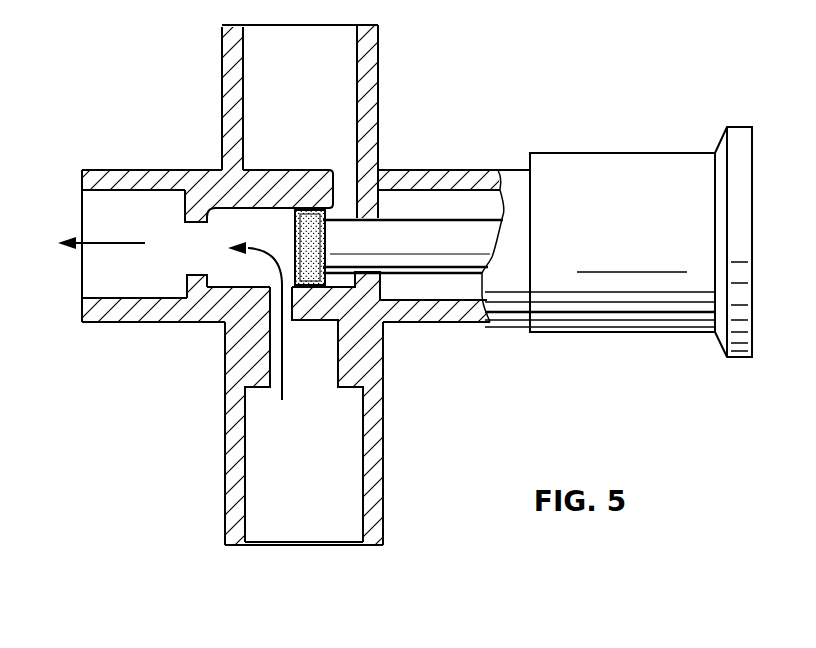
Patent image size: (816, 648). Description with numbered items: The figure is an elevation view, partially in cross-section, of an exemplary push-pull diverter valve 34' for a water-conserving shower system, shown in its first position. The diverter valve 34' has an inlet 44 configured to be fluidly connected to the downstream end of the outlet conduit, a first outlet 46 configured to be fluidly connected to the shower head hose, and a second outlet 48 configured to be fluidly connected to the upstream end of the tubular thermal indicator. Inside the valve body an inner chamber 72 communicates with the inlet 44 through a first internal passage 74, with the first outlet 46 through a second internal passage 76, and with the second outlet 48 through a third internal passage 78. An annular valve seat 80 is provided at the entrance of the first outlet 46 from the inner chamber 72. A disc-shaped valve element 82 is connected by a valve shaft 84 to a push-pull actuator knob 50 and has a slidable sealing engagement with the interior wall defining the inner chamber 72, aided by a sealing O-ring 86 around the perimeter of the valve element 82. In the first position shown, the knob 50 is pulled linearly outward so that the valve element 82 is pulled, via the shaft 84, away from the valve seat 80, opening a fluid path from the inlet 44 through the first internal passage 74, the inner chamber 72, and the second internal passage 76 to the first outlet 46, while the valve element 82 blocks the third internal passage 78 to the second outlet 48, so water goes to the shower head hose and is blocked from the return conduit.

The push-pull diverter valve 34' is at (622, 194).
The inlet 44 is at (343, 546).
The first outlet 46 is at (78, 203).
The second outlet 48 is at (352, 25).
The push-pull actuator knob 50 is at (737, 358).
The inner chamber 72 is at (260, 216).
The first internal passage 74 is at (258, 334).
The second internal passage 76 is at (202, 270).
The third internal passage 78 is at (335, 192).
The annular valve seat 80 is at (221, 203).
The disc-shaped valve element 82 is at (333, 212).
The valve shaft 84 is at (448, 258).
The sealing O-ring 86 is at (312, 289).